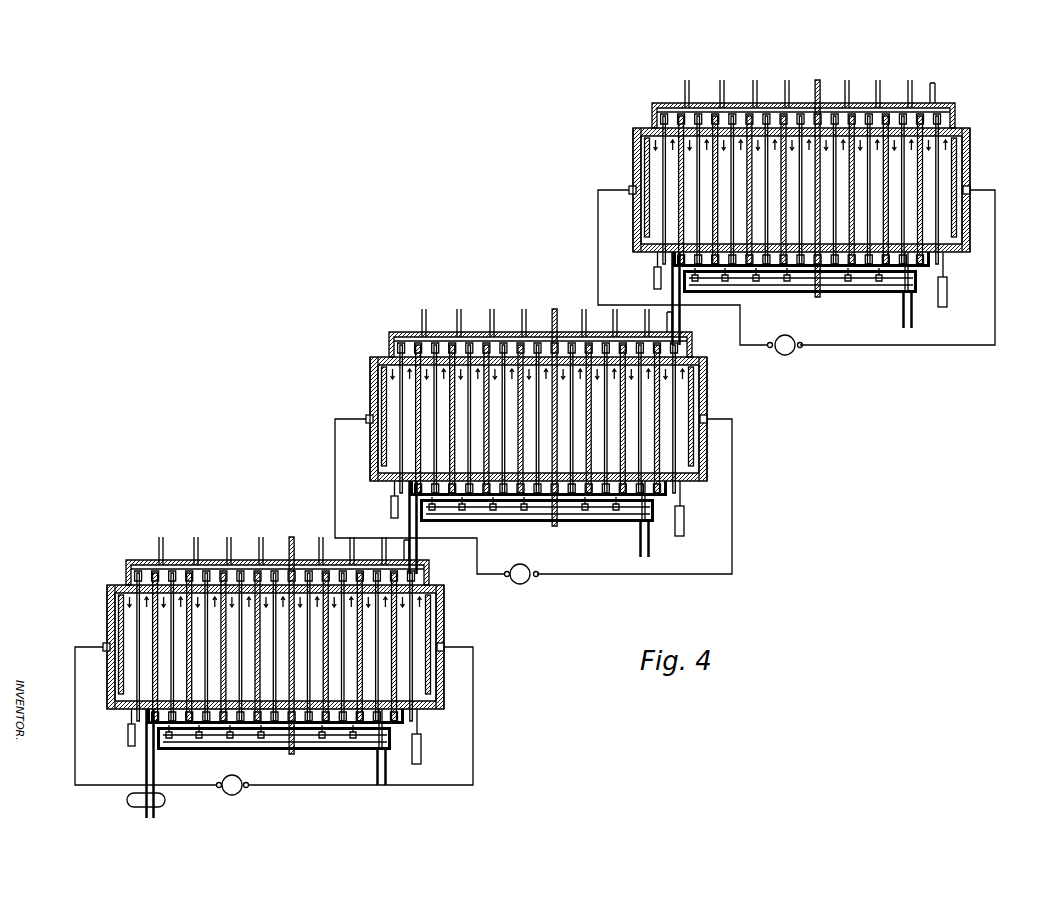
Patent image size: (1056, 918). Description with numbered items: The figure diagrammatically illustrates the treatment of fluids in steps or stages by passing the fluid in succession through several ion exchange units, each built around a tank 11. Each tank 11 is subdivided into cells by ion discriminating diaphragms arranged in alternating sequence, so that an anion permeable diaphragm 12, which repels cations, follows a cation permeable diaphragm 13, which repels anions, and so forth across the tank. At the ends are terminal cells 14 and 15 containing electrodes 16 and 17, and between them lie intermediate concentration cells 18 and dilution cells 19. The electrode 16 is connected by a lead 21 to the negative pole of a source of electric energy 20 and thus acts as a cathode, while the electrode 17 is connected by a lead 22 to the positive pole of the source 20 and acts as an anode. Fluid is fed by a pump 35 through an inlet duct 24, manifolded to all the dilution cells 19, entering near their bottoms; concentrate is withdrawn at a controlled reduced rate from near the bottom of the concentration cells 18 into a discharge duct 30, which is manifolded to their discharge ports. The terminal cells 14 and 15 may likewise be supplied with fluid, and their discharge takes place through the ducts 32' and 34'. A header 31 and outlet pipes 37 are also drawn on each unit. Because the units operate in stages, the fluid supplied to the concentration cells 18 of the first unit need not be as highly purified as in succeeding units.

The tank 11 is at (525, 425).
The anion permeable diaphragm 12 is at (546, 455).
The cation permeable diaphragm 13 is at (528, 453).
The terminal cell 14 is at (684, 416).
The terminal cell 15 is at (392, 416).
The electrode 16 is at (362, 418).
The electrode 17 is at (714, 418).
The concentration cell 18 is at (538, 417).
The dilution cell 19 is at (538, 418).
The source of electric energy 20 is at (785, 355).
The lead 21 is at (335, 469).
The lead 22 is at (995, 244).
The inlet duct 24 is at (681, 317).
The discharge duct 30 is at (793, 297).
The gas collecting header 31 is at (553, 344).
The duct 32' is at (693, 508).
The duct 34' is at (379, 499).
The pump 35 is at (165, 801).
The gas outlet pipes 37 is at (547, 322).